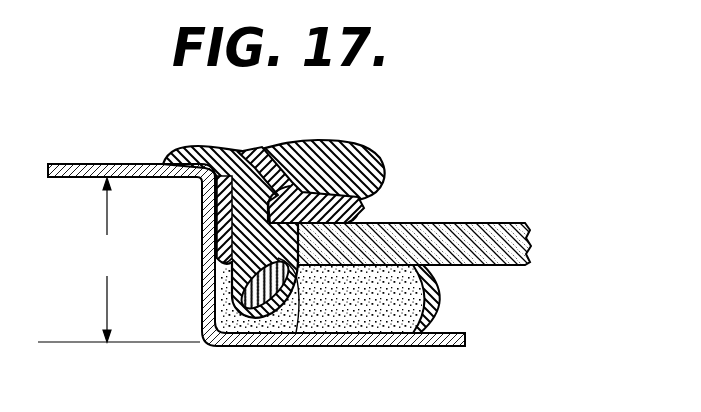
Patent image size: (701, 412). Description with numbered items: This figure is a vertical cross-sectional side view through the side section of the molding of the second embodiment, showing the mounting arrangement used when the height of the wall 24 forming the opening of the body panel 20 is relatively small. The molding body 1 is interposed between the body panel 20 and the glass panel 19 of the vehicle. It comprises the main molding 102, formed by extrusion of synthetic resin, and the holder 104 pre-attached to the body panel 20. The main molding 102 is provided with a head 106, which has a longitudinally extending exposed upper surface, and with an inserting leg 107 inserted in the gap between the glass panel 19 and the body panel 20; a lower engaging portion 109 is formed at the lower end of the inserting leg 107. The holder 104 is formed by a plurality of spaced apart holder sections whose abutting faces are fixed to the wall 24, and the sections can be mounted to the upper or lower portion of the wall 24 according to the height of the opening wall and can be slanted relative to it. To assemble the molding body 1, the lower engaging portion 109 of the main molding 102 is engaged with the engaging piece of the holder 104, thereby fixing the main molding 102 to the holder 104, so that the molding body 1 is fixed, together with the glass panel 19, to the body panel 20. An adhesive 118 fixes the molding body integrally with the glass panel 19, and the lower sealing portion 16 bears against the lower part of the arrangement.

The molding body 1 is at (278, 381).
The lower sealing lip 16 is at (296, 333).
The glass panel 19 is at (459, 242).
The body panel 20 is at (118, 163).
The wall 24 is at (205, 246).
The main molding 102 is at (260, 239).
The holder 104 is at (228, 273).
The head 106 is at (322, 117).
The inserting leg 107 is at (230, 212).
The lower engaging portion 109 is at (250, 327).
The adhesive 118 is at (397, 300).